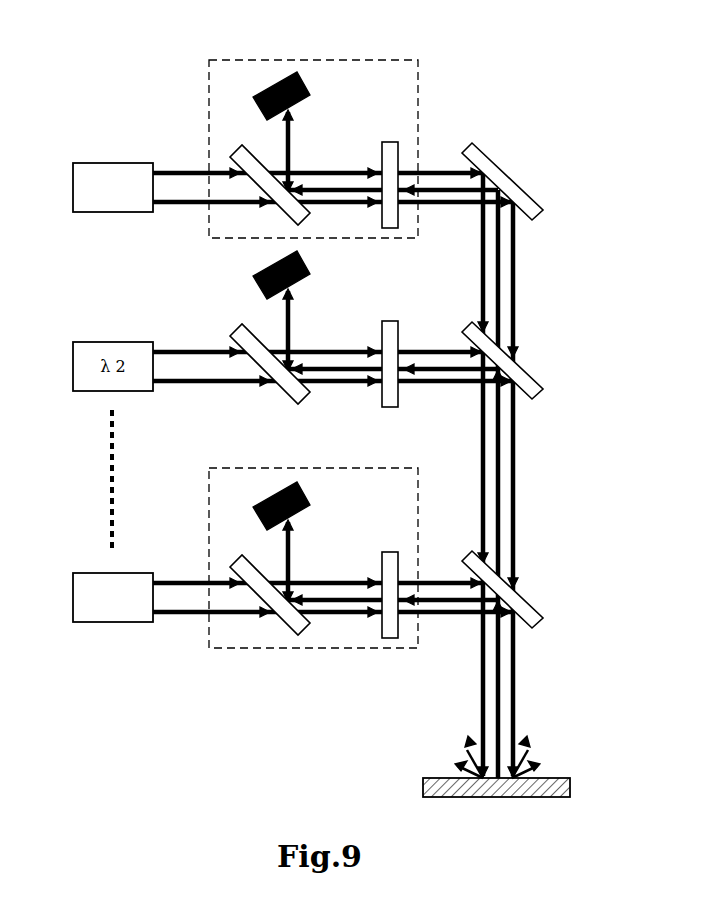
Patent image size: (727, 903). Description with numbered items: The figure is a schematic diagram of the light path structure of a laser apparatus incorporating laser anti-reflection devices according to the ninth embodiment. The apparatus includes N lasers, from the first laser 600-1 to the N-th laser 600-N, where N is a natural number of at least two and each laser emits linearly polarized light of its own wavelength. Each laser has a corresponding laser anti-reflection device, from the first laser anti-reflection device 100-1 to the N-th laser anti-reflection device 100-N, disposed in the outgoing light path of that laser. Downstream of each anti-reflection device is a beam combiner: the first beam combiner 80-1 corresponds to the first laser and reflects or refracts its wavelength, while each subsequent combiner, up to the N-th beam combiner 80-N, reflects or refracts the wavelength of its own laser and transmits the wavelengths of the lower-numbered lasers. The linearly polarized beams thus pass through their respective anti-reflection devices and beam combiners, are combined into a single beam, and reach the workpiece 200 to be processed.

The first laser 600-1 is at (90, 162).
The N-th laser 600-N is at (83, 572).
The first laser anti-reflection device 100-1 is at (306, 60).
The N-th laser anti-reflection device 100-N is at (335, 468).
The first beam combiner 80-1 is at (528, 198).
The N-th beam combiner 80-N is at (528, 598).
The workpiece 200 is at (435, 778).